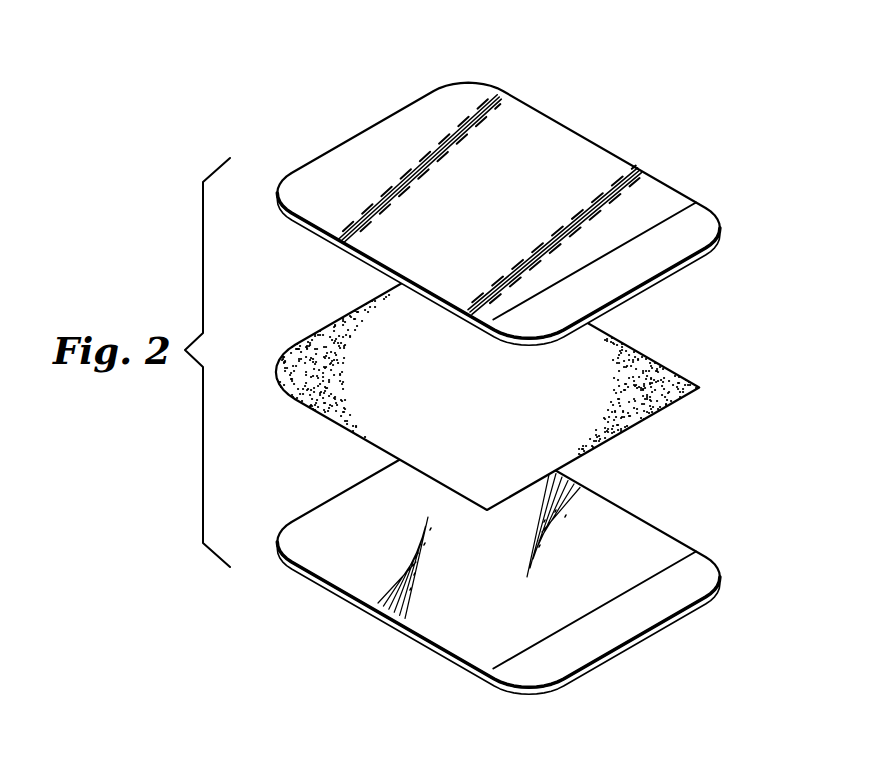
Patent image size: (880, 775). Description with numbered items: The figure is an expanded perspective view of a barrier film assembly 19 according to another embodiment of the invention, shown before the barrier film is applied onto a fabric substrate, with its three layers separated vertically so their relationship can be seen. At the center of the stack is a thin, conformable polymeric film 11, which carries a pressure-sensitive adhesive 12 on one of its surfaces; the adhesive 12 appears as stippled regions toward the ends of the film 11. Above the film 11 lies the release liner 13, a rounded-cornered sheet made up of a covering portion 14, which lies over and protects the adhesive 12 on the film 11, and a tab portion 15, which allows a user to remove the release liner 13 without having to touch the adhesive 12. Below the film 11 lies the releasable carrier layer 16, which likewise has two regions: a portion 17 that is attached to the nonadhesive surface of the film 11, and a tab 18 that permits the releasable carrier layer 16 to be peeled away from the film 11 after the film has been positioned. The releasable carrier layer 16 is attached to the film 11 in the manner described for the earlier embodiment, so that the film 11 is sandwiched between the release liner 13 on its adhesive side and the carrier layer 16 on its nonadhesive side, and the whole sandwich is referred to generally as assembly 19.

The barrier film assembly 19 is at (492, 353).
The release liner 13 is at (501, 197).
The portion 14 is at (571, 142).
The tab portion 15 is at (703, 224).
The polymeric film 11 is at (480, 380).
The pressure-sensitive adhesive 12 is at (301, 356).
The releasable carrier layer 16 is at (492, 563).
The portion 17 is at (644, 535).
The tab 18 is at (498, 567).